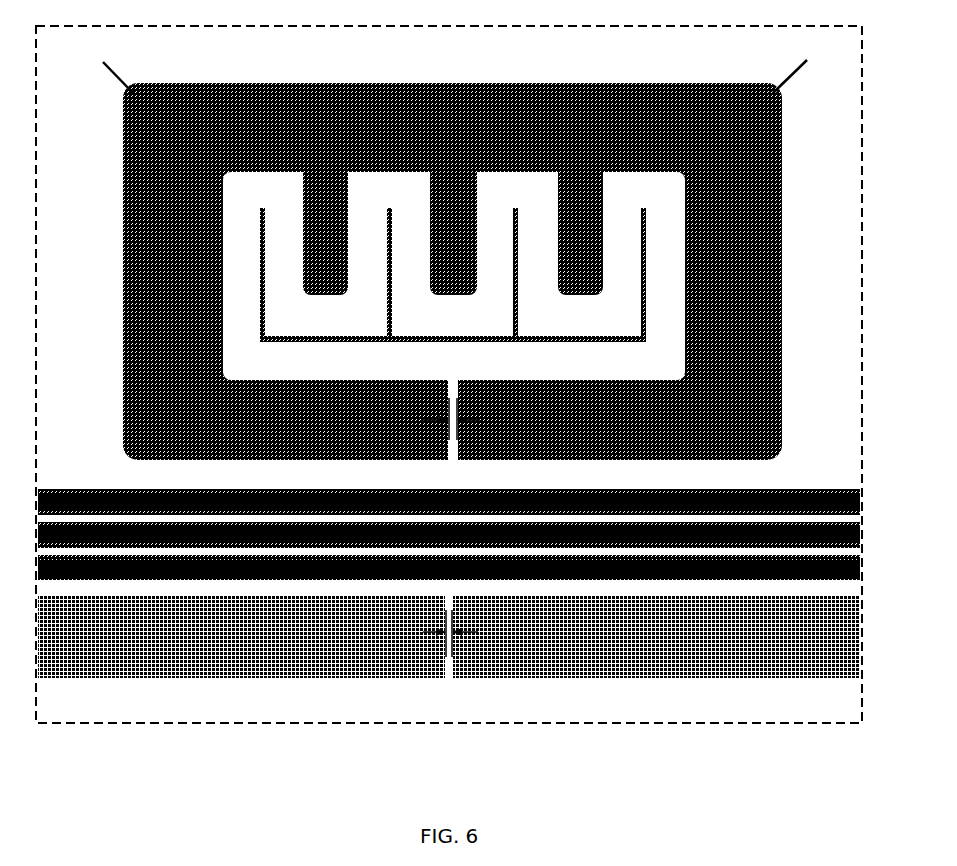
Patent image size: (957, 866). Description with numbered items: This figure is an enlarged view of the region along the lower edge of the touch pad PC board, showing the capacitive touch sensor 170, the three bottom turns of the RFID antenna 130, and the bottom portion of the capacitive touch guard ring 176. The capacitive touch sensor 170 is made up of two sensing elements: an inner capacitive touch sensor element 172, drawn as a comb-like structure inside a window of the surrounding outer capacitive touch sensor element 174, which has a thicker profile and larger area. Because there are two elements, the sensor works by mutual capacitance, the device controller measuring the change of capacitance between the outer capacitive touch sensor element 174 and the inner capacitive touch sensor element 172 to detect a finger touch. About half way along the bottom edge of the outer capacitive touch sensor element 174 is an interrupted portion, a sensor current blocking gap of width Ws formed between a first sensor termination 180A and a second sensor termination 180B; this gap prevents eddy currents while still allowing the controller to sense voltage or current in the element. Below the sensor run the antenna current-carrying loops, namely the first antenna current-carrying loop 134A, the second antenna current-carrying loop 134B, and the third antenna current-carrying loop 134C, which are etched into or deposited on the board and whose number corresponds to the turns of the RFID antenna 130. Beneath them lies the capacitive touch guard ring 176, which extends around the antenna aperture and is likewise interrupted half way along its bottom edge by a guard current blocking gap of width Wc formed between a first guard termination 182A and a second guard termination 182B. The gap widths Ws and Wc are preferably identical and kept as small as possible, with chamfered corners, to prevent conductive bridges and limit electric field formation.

The capacitive touch sensor 170 is at (208, 74).
The outer capacitive touch sensor element 174 is at (582, 115).
The inner capacitive touch sensor element 172 is at (413, 334).
The first sensor termination 180A is at (447, 392).
The second sensor termination 180B is at (453, 448).
The sensor current blocking gap width Ws is at (457, 420).
The RFID antenna 130 is at (114, 474).
The first antenna current-carrying loop 134A is at (775, 562).
The second antenna current-carrying loop 134B is at (732, 532).
The third antenna current-carrying loop 134C is at (262, 497).
The capacitive touch guard ring 176 is at (208, 648).
The first guard termination 182A is at (445, 662).
The second guard termination 182B is at (453, 620).
The guard current blocking gap width Wc is at (445, 630).